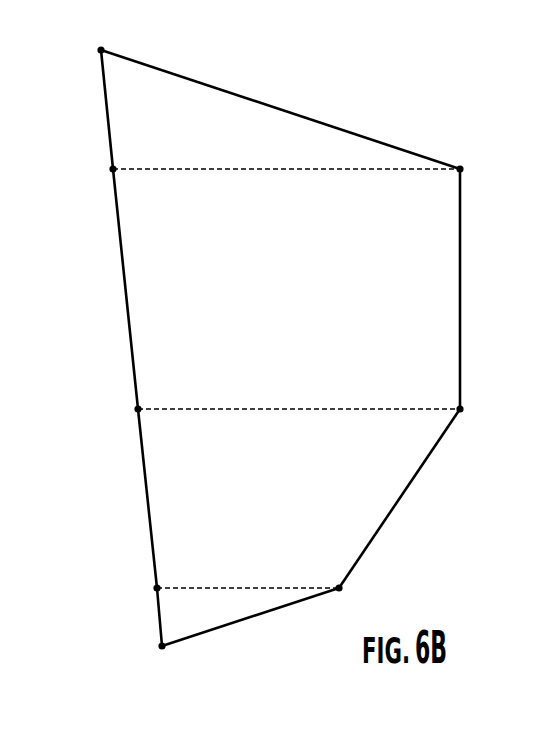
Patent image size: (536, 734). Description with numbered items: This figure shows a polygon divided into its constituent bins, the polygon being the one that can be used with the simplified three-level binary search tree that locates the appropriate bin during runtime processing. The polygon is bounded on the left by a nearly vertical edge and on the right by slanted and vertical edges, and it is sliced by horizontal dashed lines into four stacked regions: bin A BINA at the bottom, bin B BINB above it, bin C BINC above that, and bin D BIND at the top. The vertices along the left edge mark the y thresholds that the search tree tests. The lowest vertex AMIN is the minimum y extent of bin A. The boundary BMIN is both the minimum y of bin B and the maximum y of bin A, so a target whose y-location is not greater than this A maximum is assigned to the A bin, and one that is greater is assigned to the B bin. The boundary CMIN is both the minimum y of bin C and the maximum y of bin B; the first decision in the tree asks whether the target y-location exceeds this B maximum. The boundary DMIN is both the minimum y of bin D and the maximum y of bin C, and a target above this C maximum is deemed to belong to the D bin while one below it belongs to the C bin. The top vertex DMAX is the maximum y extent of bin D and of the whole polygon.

The bin D BIND is at (280, 109).
The bin C BINC is at (286, 289).
The bin B BINB is at (299, 498).
The bin A BINA is at (248, 617).
The maximum y extent of bin D DMAX is at (74, 51).
The minimum y extent of bin D and maximum y extent of bin C DMIN is at (262, 169).
The minimum y extent of bin C and maximum y extent of bin B CMIN is at (274, 408).
The minimum y extent of bin B and maximum y extent of bin A BMIN is at (221, 582).
The minimum y extent of bin A AMIN is at (137, 648).